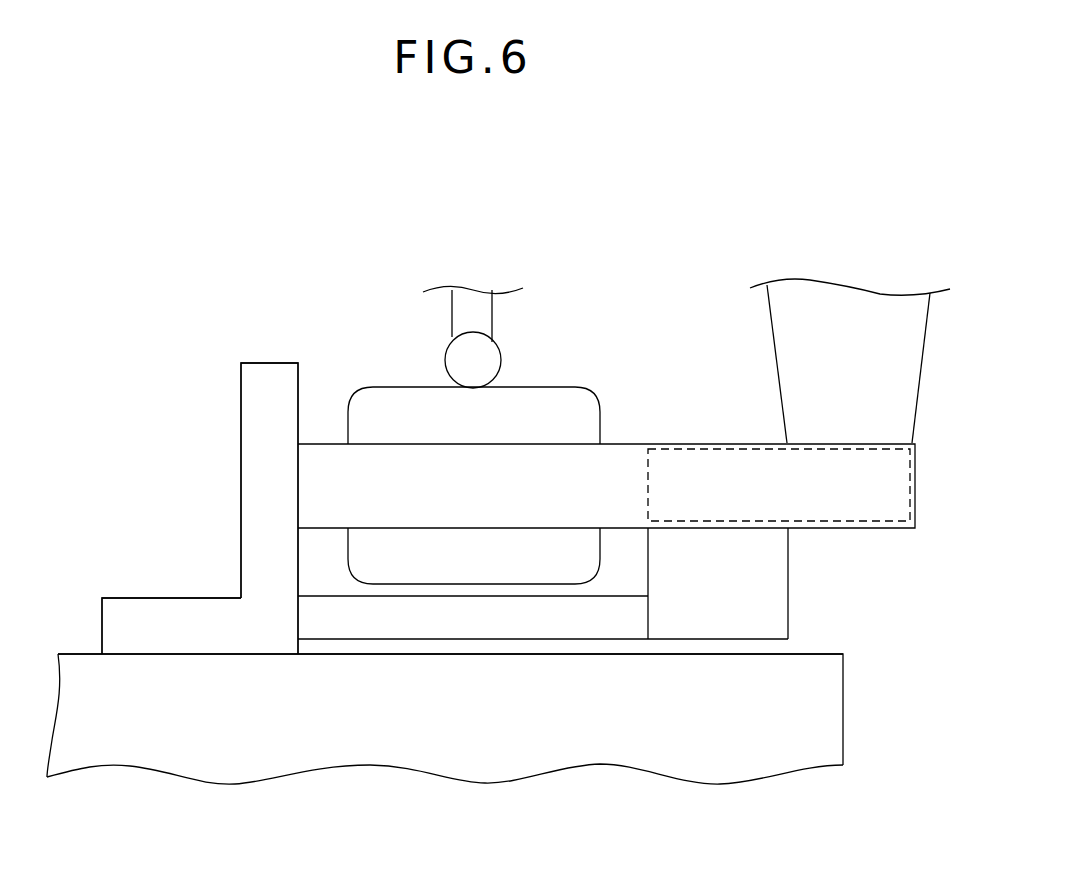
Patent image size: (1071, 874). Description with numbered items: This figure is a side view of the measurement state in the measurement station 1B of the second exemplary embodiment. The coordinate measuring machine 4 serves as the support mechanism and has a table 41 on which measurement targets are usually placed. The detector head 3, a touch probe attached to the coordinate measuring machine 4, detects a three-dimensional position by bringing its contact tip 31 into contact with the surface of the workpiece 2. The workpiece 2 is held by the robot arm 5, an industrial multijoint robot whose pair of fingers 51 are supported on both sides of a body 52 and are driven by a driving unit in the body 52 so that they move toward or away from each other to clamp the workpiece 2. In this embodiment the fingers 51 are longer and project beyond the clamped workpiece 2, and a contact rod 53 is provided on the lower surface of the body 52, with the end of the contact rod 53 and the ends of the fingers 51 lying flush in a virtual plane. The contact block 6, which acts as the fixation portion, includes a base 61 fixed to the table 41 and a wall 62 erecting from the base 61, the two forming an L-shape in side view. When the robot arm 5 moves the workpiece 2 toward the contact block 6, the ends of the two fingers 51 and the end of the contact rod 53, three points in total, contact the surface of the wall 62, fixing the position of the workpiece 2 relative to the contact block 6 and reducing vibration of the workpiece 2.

The measurement station 1B is at (613, 220).
The workpiece 2 is at (535, 387).
The detector head 3 is at (428, 313).
The contact tip 31 is at (445, 360).
The coordinate measuring machine 4 is at (852, 730).
The table 41 is at (527, 651).
The robot arm 5 is at (887, 195).
The fingers 51 is at (606, 448).
The body 52 is at (882, 525).
The contact rod 53 is at (621, 636).
The contact block 6 is at (206, 336).
The base 61 is at (168, 598).
The wall 62 is at (241, 422).